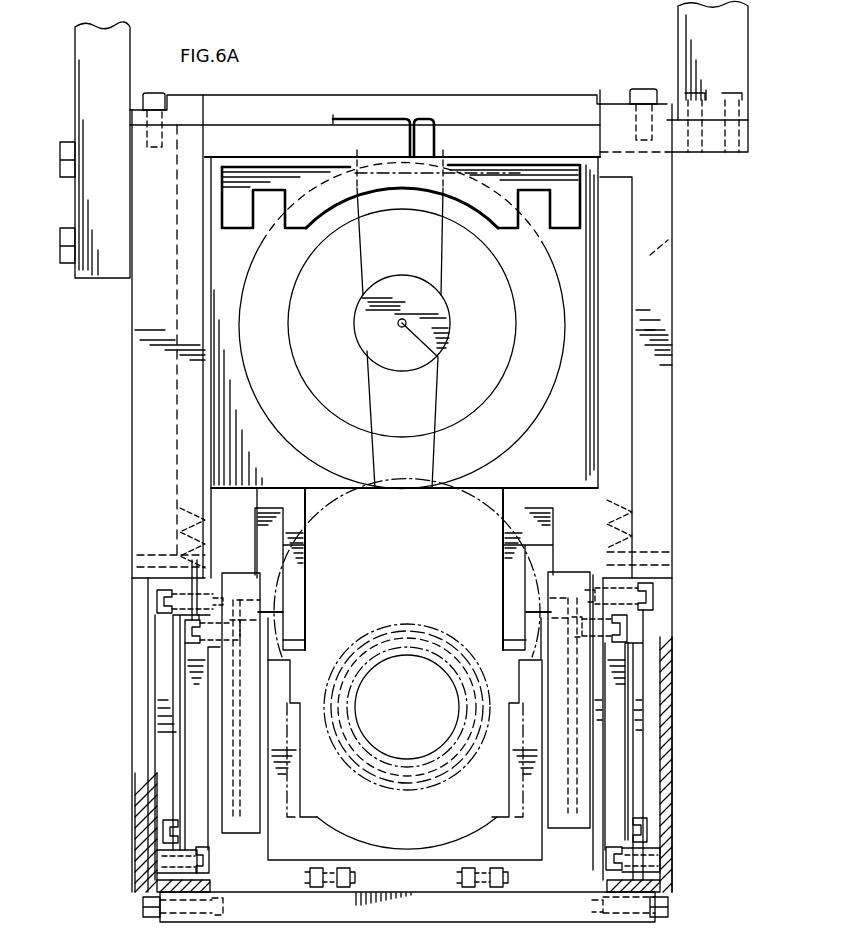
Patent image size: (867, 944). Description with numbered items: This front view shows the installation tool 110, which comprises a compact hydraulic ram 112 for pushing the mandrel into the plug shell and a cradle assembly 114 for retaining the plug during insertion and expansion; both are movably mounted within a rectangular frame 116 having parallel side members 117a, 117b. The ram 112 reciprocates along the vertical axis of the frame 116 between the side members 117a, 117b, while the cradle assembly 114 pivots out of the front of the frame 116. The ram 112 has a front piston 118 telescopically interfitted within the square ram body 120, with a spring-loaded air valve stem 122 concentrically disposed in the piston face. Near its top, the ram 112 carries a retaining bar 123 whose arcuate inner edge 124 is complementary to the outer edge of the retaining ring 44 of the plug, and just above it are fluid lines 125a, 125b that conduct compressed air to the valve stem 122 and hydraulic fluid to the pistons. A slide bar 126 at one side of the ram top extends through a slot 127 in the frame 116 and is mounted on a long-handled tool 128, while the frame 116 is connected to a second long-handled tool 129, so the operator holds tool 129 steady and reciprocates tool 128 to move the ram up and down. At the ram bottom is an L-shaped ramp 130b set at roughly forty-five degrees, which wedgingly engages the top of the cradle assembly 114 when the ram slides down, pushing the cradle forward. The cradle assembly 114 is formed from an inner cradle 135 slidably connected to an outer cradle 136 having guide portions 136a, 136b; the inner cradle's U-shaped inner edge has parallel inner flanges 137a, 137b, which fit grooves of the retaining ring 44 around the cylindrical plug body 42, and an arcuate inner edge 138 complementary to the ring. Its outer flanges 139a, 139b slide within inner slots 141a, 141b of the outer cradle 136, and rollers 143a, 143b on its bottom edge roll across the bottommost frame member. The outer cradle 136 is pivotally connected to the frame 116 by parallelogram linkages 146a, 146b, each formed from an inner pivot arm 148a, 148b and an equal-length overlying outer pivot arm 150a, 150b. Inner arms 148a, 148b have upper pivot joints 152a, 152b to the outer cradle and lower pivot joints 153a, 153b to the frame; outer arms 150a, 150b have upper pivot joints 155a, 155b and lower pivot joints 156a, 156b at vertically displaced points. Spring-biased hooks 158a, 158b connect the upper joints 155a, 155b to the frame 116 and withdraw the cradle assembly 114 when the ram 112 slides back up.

The installation tool 110 is at (477, 70).
The compact hydraulic ram 112 is at (545, 466).
The cradle assembly 114 is at (562, 673).
The rectangular frame 116 is at (140, 367).
The side member 117a is at (145, 416).
The side member 117b is at (650, 437).
The front piston 118 is at (370, 335).
The square ram body 120 is at (565, 395).
The spring-loaded air valve stem 122 is at (437, 355).
The retaining bar 123 is at (565, 192).
The arcuate inner edge 124 is at (400, 188).
The fluid line 125a is at (405, 140).
The fluid line 125b is at (436, 140).
The slide bar 126 is at (677, 137).
The slot 127 is at (670, 240).
The long-handled tool 128 is at (697, 25).
The second long-handled tool 129 is at (105, 195).
The ramp 130b is at (515, 497).
The inner cradle 135 is at (515, 856).
The outer cradle 136 is at (246, 572).
The left guide member 136a is at (283, 498).
The right guide member 136b is at (546, 668).
The inner flange 137a is at (318, 808).
The inner flange 137b is at (515, 788).
The arcuate inner edge 138 is at (440, 847).
The outer flange 139a is at (268, 652).
The outer flange 139b is at (547, 642).
The inner slot 141a is at (260, 608).
The inner slot 141b is at (547, 603).
The roller 143a is at (325, 892).
The roller 143b is at (482, 892).
The parallelogram linkage 146a is at (172, 742).
The parallelogram linkage 146b is at (642, 722).
The inner pivot arm 148a is at (197, 825).
The inner pivot arm 148b is at (617, 812).
The outer pivot arm 150a is at (168, 677).
The outer pivot arm 150b is at (675, 760).
The upper pivot joint 152a is at (185, 630).
The upper pivot joint 152b is at (627, 632).
The lower pivot joint 153a is at (209, 866).
The lower pivot joint 153b is at (607, 867).
The upper pivot joint 155a is at (157, 600).
The upper pivot joint 155b is at (653, 595).
The lower pivot joint 156a is at (162, 830).
The lower pivot joint 156b is at (650, 832).
The spring-biased hook 158a is at (190, 575).
The spring-biased hook 158b is at (640, 580).
The cylindrical plug body 42 is at (410, 726).
The retaining ring 44 is at (410, 619).